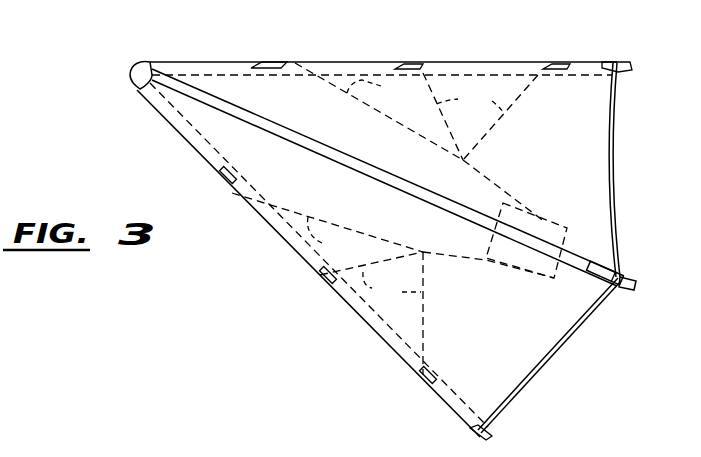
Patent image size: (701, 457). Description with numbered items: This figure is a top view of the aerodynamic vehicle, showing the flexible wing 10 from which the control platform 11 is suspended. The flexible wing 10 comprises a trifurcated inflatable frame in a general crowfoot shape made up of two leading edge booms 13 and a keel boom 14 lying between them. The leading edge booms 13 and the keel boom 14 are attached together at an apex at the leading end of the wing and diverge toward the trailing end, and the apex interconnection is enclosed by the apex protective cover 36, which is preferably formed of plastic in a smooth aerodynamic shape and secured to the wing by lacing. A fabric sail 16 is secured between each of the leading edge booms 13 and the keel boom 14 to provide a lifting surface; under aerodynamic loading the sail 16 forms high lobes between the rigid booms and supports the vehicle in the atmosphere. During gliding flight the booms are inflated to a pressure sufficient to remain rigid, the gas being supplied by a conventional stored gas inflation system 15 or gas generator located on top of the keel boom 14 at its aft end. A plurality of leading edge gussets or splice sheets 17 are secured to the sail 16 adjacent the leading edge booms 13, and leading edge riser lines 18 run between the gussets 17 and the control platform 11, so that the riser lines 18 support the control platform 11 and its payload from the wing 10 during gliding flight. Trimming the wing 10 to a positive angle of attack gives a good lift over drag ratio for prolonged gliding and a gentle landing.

The flexible wing 10 is at (333, 51).
The control platform 11 is at (548, 222).
The leading edge booms 13 is at (472, 63).
The keel boom 14 is at (634, 282).
The stored gas inflation system 15 is at (592, 274).
The fabric sail 16 is at (360, 137).
The leading edge gussets 17 is at (268, 65).
The riser lines 18 is at (406, 191).
The apex protective cover 36 is at (136, 62).